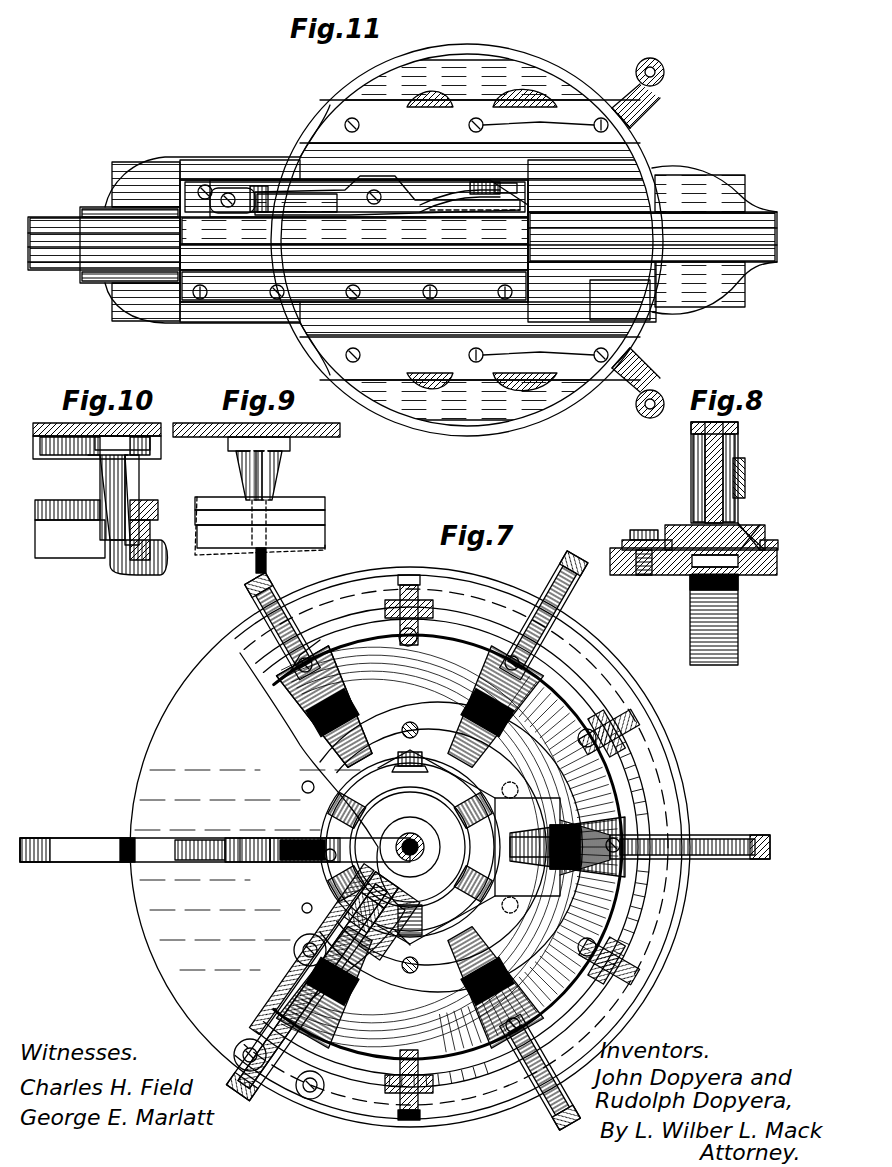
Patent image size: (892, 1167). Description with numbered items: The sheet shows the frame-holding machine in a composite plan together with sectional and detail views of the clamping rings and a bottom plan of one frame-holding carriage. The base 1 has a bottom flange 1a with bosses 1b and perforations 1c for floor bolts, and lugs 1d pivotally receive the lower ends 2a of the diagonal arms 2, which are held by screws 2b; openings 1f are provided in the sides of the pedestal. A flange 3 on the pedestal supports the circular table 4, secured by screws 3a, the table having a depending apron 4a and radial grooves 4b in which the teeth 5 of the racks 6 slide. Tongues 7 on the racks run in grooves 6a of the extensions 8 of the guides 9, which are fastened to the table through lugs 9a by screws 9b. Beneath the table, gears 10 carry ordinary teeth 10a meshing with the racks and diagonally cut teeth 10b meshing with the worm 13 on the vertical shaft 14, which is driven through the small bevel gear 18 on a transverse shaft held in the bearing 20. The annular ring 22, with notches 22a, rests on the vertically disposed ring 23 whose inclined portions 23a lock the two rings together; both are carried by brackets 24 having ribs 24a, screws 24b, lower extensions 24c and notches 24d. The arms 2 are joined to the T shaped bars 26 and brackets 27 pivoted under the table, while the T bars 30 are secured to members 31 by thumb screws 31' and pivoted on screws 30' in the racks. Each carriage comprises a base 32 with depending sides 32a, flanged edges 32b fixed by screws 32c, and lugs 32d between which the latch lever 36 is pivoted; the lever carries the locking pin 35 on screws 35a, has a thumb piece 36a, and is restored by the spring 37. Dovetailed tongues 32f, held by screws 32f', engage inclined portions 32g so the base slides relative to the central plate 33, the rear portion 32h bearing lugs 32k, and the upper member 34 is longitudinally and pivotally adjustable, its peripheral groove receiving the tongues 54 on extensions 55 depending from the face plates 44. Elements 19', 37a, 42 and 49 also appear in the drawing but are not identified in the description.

In FIG. 7, the base 1 is at (410, 847).
In FIG. 7, the flange 1a is at (600, 800).
In FIG. 7, the bosses 1b is at (595, 715).
In FIG. 7, the perforations 1c is at (598, 745).
In FIG. 7, the lugs 1d is at (300, 705).
In FIG. 7, the openings 1f is at (300, 748).
In FIG. 7, the diagonally extending arms 2 is at (270, 600).
In FIG. 7, the lower ends of arms 2a is at (540, 615).
In FIG. 7, the screws 2b is at (296, 662).
In FIG. 7, the flange 3 is at (527, 847).
In FIG. 7, the bolts or screws 3a is at (402, 730).
In FIG. 10, the circular table 4 is at (45, 425).
In FIG. 8, the circular table 4 is at (775, 565).
In FIG. 7, the circular table 4 is at (305, 835).
In FIG. 10, the depending apron 4a is at (60, 458).
In FIG. 8, the grooves 4b is at (690, 585).
In FIG. 7, the grooves 4b is at (262, 840).
In FIG. 8, the teeth 5 is at (770, 542).
In FIG. 8, the racks 6 is at (742, 522).
In FIG. 7, the racks 6 is at (215, 850).
In FIG. 8, the grooves 6a is at (672, 528).
In FIG. 8, the tongues 7 is at (693, 530).
In FIG. 8, the extensions 8 is at (680, 526).
In FIG. 8, the guides 9 is at (650, 577).
In FIG. 7, the guides 9 is at (318, 985).
In FIG. 8, the lugs 9a is at (622, 540).
In FIG. 7, the lugs 9a is at (294, 950).
In FIG. 8, the screws 9b is at (635, 530).
In FIG. 7, the screws 9b is at (302, 943).
In FIG. 8, the gears 10 is at (740, 615).
In FIG. 7, the gears 10 is at (451, 830).
In FIG. 8, the gear teeth 10a is at (740, 585).
In FIG. 7, the gear teeth 10a is at (560, 840).
In FIG. 7, the diagonally cut teeth 10b is at (560, 851).
In FIG. 7, the worm 13 is at (410, 842).
In FIG. 7, the vertical shaft 14 is at (404, 847).
In FIG. 7, the small bevel gear 18 is at (428, 768).
In FIG. 7, the clamp block 19' is at (367, 888).
In FIG. 7, the bearing 20 is at (410, 752).
In FIG. 10, the annular ring 22 is at (106, 501).
In FIG. 9, the annular ring 22 is at (325, 485).
In FIG. 7, the annular ring 22 is at (660, 730).
In FIG. 10, the notches 22a is at (150, 492).
In FIG. 7, the notches 22a is at (470, 612).
In FIG. 10, the ring 23 is at (70, 539).
In FIG. 9, the ring 23 is at (261, 536).
In FIG. 9, the inclined portions 23a is at (232, 548).
In FIG. 10, the brackets 24 is at (100, 494).
In FIG. 9, the brackets 24 is at (276, 478).
In FIG. 7, the brackets 24 is at (420, 605).
In FIG. 10, the ribs 24a is at (140, 495).
In FIG. 7, the ribs 24a is at (405, 580).
In FIG. 10, the screws 24b is at (98, 438).
In FIG. 9, the screws 24b is at (290, 446).
In FIG. 10, the lower extensions 24c is at (150, 576).
In FIG. 9, the lower extensions 24c is at (268, 560).
In FIG. 7, the lower extensions 24c is at (400, 575).
In FIG. 10, the notches 24d is at (128, 545).
In FIG. 7, the T shaped bars 26 is at (77, 850).
In FIG. 7, the brackets 27 is at (110, 862).
In FIG. 11, the T bars 30 is at (402, 241).
In FIG. 8, the T bars 30 is at (729, 471).
In FIG. 7, the T bars 30 is at (317, 990).
In FIG. 7, the screws 30' is at (359, 909).
In FIG. 7, the members 31 is at (337, 908).
In FIG. 8, the thumb screws 31' is at (751, 474).
In FIG. 7, the thumb screws 31' is at (407, 934).
In FIG. 11, the bases 32 is at (455, 178).
In FIG. 11, the depending sides 32a is at (592, 286).
In FIG. 11, the upper flanged edges 32b is at (185, 185).
In FIG. 11, the screws 32c is at (195, 190).
In FIG. 11, the lugs 32d is at (400, 178).
In FIG. 11, the dovetailed tongues 32f is at (470, 241).
In FIG. 11, the screws 32f' is at (538, 244).
In FIG. 11, the inclined portions 32g is at (318, 147).
In FIG. 11, the rear portions 32h is at (202, 240).
In FIG. 11, the vertically extended lugs 32k is at (92, 205).
In FIG. 11, the central plates 33 is at (480, 240).
In FIG. 11, the upper members 34 is at (535, 55).
In FIG. 11, the pins 35 is at (215, 190).
In FIG. 11, the screws 35a is at (265, 176).
In FIG. 11, the latch levers 36 is at (370, 195).
In FIG. 11, the thumb pieces 36a is at (505, 180).
In FIG. 11, the springs 37 is at (520, 186).
In FIG. 11, the catch rod 37a is at (525, 210).
In FIG. 11, the partition 42 is at (605, 300).
In FIG. 11, the face plates 44 is at (644, 238).
In FIG. 11, the lug eye 49 is at (664, 72).
In FIG. 11, the tongues 54 is at (640, 128).
In FIG. 11, the extensions 55 is at (640, 118).